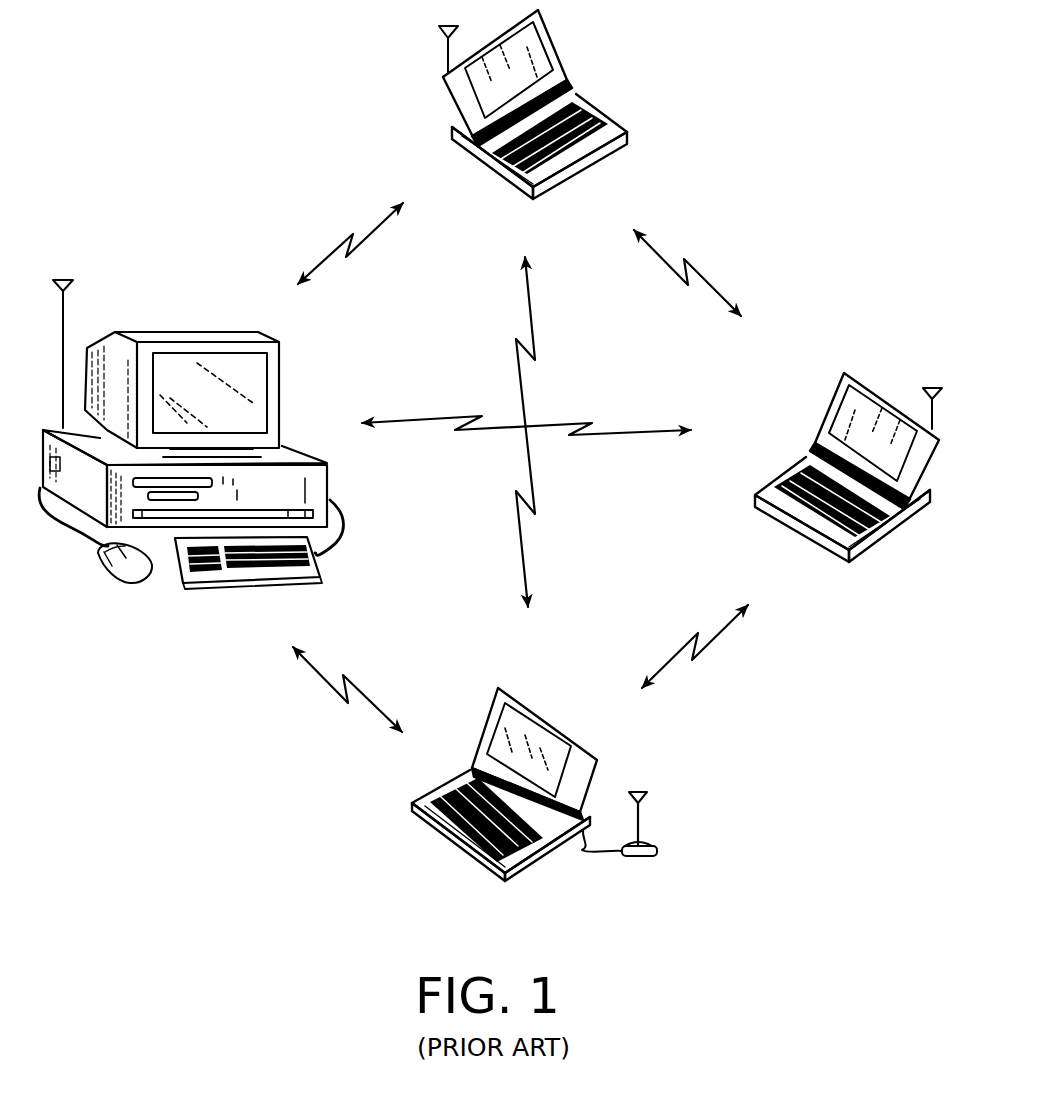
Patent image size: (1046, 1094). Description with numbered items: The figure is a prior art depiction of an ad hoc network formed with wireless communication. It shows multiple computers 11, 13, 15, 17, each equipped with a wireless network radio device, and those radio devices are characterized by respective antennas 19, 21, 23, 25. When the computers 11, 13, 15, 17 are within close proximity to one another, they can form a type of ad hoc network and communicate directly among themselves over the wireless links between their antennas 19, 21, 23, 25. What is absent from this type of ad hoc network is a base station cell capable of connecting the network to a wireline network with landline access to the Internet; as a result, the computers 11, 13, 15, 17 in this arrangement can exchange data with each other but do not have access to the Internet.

The computer 11 is at (593, 107).
The computer 13 is at (917, 512).
The computer 15 is at (208, 328).
The computer 17 is at (433, 787).
The antenna 19 is at (446, 50).
The antenna 21 is at (927, 407).
The antenna 23 is at (65, 303).
The antenna 25 is at (643, 810).